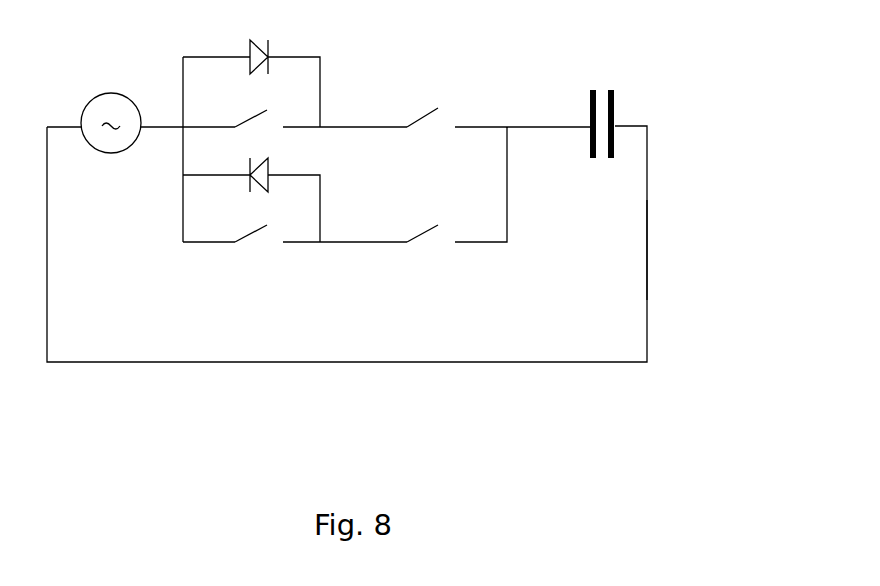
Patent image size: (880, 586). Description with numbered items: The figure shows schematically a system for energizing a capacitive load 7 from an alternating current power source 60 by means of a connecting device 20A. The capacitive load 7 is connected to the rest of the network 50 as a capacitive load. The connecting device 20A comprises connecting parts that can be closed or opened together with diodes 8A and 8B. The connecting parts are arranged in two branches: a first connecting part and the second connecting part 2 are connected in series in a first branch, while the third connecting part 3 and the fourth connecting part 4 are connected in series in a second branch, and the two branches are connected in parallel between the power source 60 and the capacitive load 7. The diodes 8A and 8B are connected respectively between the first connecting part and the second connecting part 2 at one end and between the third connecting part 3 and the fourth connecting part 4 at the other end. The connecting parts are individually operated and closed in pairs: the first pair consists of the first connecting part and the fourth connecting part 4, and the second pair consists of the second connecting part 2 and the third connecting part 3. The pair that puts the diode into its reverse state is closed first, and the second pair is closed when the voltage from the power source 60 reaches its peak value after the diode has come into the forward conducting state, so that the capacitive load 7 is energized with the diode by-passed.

The alternating current power source 60 is at (98, 127).
The diode 8A is at (250, 55).
The diode 8B is at (248, 175).
The second connecting part 2 is at (423, 117).
The third connecting part 3 is at (262, 232).
The fourth connecting part 4 is at (427, 229).
The capacitive load 7 is at (615, 108).
The connecting device 20A is at (540, 81).
The rest of the network 50 is at (663, 223).